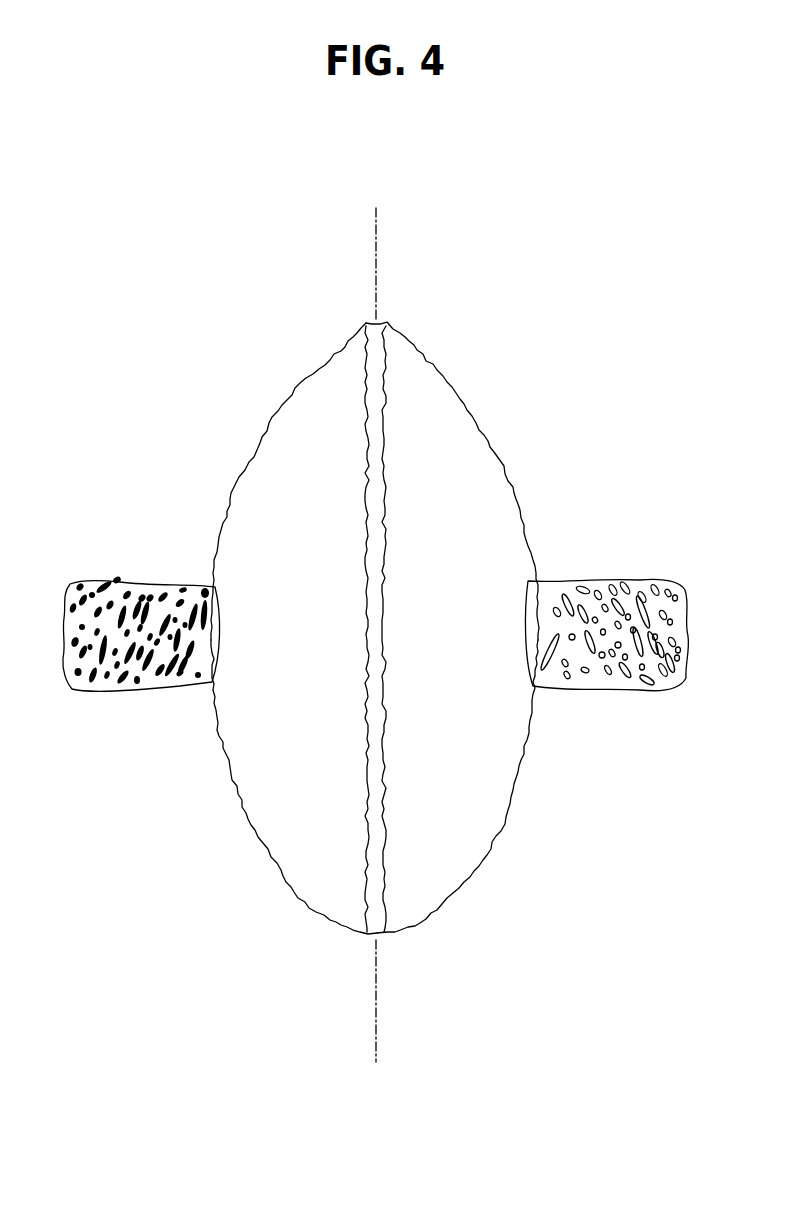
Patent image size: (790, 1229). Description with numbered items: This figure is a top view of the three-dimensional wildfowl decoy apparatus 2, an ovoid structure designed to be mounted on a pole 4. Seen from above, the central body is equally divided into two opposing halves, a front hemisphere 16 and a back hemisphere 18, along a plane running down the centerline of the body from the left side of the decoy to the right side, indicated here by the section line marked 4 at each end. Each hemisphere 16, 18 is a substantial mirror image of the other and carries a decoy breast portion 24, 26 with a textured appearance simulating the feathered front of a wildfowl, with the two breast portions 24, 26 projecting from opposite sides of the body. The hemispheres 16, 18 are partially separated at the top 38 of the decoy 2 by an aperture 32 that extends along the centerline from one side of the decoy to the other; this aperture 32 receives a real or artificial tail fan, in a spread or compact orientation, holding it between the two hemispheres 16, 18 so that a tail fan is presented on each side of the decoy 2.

The wildfowl decoy apparatus 2 is at (376, 614).
The pole 4 is at (376, 238).
The front hemisphere 16 is at (273, 770).
The back hemisphere 18 is at (468, 772).
The decoy breast portion 24 is at (280, 450).
The decoy breast portion 26 is at (460, 460).
The aperture 32 is at (365, 547).
The top 38 is at (383, 580).